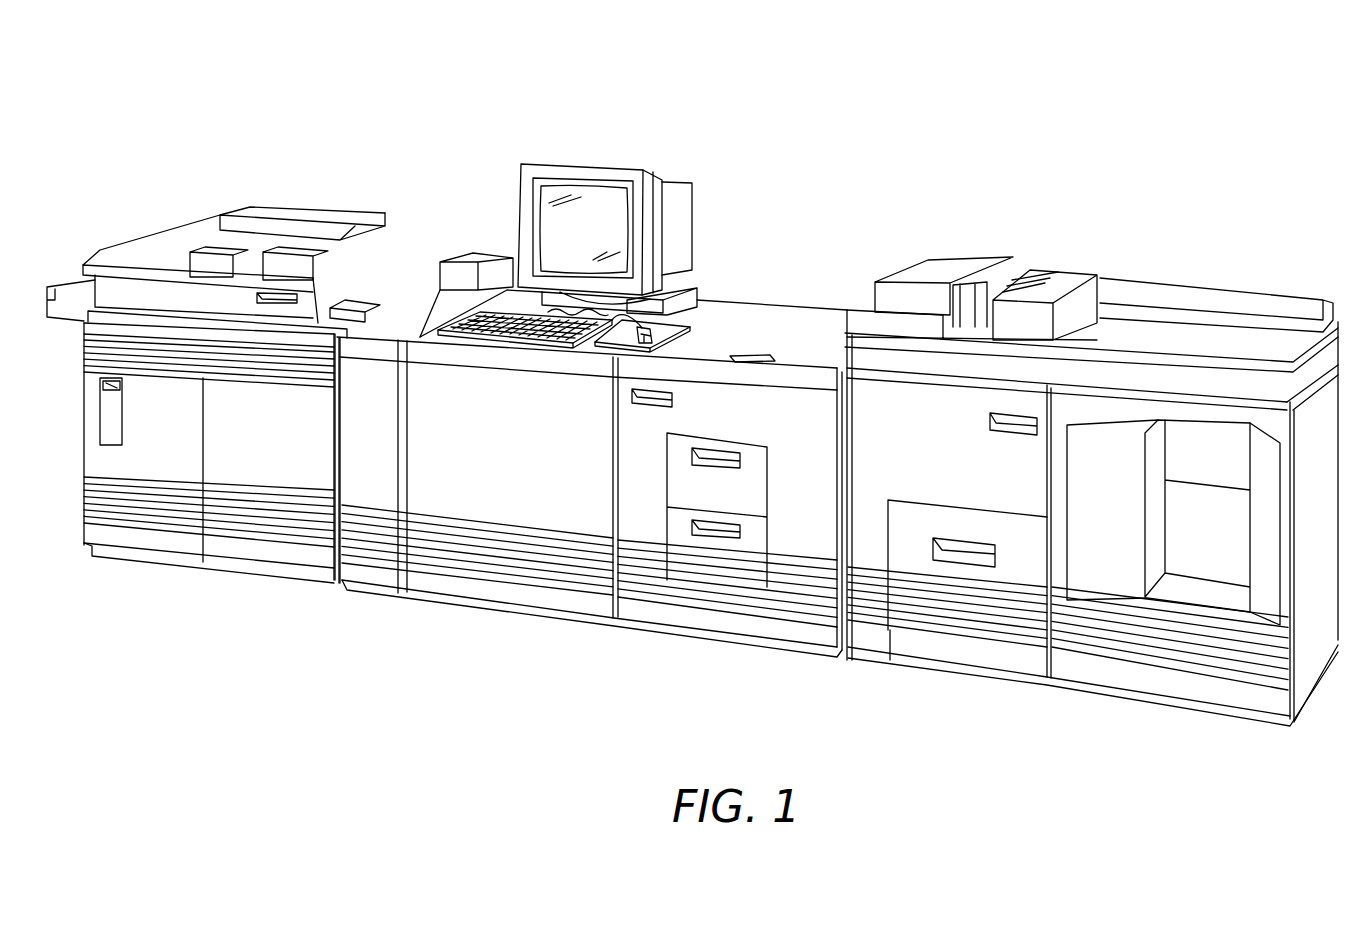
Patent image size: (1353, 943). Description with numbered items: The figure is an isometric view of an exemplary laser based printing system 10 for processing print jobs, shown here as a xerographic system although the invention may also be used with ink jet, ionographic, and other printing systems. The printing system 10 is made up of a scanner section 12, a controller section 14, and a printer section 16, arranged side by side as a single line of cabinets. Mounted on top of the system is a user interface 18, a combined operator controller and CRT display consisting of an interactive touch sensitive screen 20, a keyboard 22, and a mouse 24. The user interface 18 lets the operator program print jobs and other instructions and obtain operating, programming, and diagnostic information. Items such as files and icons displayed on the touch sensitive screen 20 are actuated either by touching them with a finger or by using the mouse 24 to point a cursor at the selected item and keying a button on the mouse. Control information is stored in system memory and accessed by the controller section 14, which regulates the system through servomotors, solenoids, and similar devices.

The printing system 10 is at (781, 78).
The scanner section 12 is at (322, 198).
The controller section 14 is at (76, 442).
The printer section 16 is at (805, 235).
The user interface 18 is at (613, 162).
The touch sensitive screen 20 is at (553, 233).
The keyboard 22 is at (513, 337).
The mouse 24 is at (610, 353).